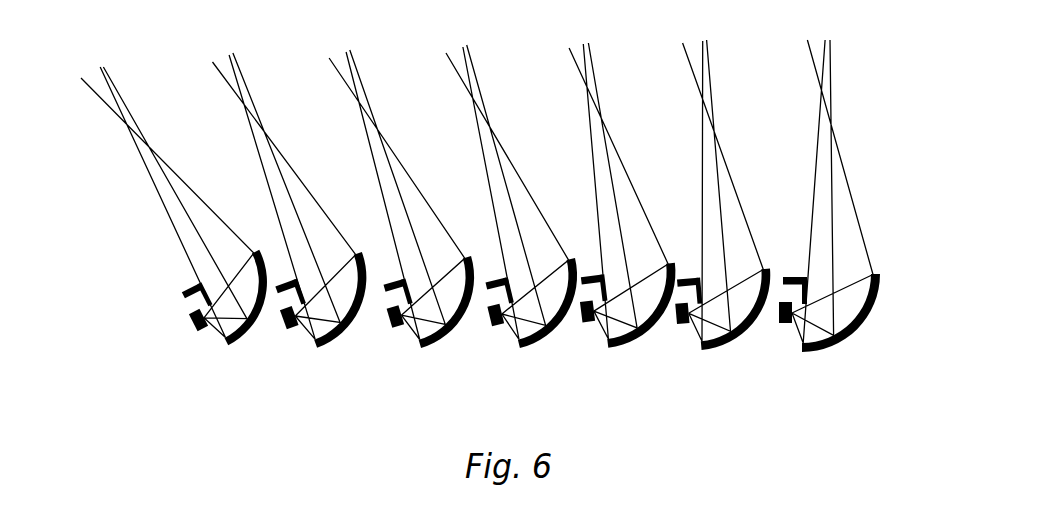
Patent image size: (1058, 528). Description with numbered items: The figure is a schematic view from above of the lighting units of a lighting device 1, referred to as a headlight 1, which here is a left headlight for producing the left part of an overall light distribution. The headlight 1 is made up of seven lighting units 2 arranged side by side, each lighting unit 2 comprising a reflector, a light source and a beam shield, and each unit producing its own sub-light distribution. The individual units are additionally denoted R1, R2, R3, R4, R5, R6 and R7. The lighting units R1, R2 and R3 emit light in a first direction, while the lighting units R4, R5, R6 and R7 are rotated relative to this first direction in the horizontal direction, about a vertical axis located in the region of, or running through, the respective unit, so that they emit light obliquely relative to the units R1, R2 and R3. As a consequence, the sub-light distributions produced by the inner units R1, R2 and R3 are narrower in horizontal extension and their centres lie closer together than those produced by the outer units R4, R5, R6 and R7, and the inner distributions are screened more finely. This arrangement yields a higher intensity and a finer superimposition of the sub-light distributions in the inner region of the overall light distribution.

The lighting device 1 is at (508, 259).
The lighting unit 2 is at (508, 211).
The lighting unit R1 is at (829, 211).
The lighting unit R2 is at (725, 211).
The lighting unit R3 is at (626, 213).
The lighting unit R4 is at (519, 214).
The lighting unit R5 is at (410, 216).
The lighting unit R6 is at (300, 218).
The lighting unit R7 is at (186, 225).